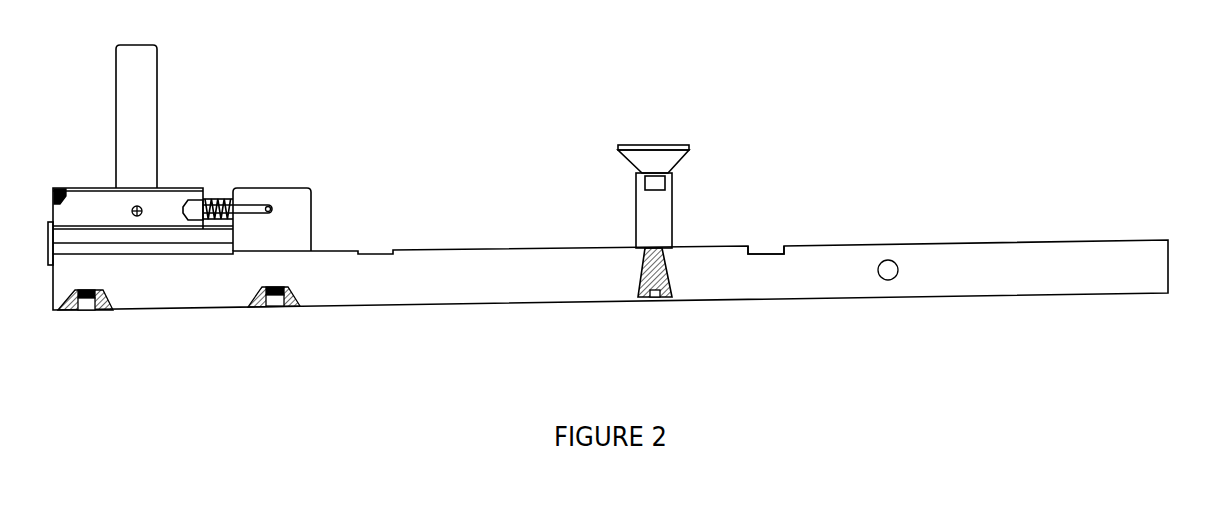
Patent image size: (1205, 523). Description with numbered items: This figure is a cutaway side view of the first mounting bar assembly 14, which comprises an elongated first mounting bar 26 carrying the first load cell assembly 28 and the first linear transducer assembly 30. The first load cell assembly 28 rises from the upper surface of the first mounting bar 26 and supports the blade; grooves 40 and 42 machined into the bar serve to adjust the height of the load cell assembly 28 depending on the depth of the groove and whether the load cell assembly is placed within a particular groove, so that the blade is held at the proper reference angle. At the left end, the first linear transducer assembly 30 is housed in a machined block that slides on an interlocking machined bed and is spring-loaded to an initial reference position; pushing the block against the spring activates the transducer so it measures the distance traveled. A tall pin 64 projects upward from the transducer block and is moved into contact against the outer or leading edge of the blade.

The first mounting bar assembly 14 is at (608, 189).
The first mounting bar 26 is at (823, 283).
The first load cell assembly 28 is at (701, 164).
The first linear transducer assembly 30 is at (191, 144).
The groove 40 is at (764, 247).
The groove 42 is at (642, 248).
The pin 64 is at (144, 72).